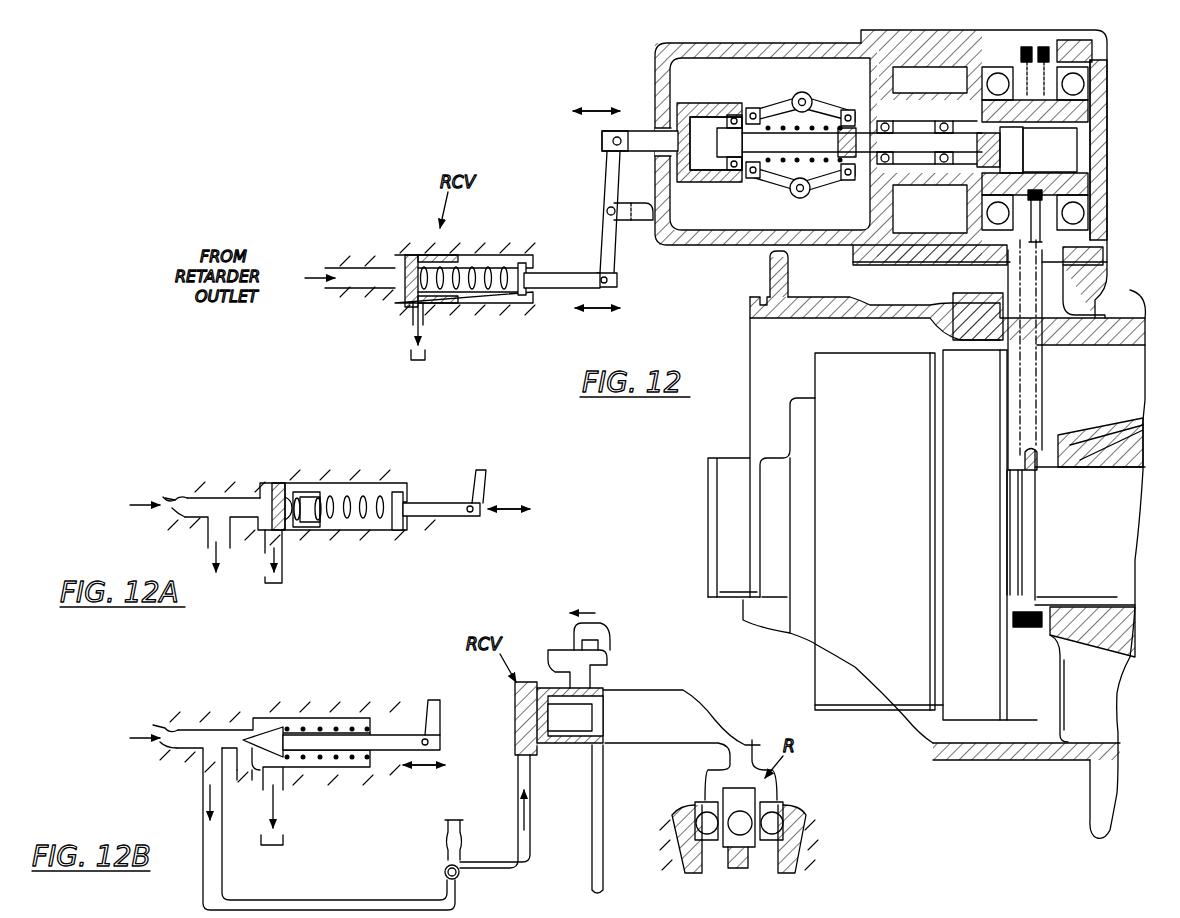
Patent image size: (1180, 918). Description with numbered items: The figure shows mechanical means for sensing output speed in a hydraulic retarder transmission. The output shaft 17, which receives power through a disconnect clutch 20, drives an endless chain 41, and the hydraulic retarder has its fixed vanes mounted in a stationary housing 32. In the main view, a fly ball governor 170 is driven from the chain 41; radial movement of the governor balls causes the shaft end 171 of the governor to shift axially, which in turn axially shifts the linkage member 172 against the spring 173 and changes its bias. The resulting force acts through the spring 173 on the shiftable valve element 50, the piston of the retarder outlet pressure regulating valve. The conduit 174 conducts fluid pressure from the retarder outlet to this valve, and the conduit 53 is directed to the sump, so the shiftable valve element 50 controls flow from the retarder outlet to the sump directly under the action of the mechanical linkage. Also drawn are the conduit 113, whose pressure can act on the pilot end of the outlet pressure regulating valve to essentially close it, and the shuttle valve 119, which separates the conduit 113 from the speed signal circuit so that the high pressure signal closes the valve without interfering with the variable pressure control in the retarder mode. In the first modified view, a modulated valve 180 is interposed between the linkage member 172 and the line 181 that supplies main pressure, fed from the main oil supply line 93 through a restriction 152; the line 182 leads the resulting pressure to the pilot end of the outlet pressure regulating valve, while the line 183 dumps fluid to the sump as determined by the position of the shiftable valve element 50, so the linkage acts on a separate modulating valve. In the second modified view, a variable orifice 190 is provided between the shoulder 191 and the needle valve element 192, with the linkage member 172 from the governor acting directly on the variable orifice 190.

In FIG. 12, the shaft 17 is at (1094, 539).
In FIG. 12, the disconnect clutch 20 is at (810, 355).
In FIG. 12, the stationary housing 32 is at (800, 808).
In FIG. 12, the endless chain 41 is at (1044, 412).
In FIG. 12, the shiftable valve element 50 is at (410, 256).
In FIG. 12A, the shiftable valve element 50 is at (288, 490).
In FIG. 12, the conduit 53 is at (408, 318).
In FIG. 12A, the main oil supply line 93 is at (150, 514).
In FIG. 12B, the main oil supply line 93 is at (150, 750).
In FIG. 12B, the conduit 113 is at (445, 832).
In FIG. 12B, the shuttle valve 119 is at (444, 877).
In FIG. 12A, the restriction 152 is at (168, 498).
In FIG. 12B, the restriction 152 is at (163, 728).
In FIG. 12, the fly ball governor 170 is at (760, 190).
In FIG. 12, the shaft end 171 is at (602, 141).
In FIG. 12, the linkage member 172 is at (565, 273).
In FIG. 12A, the linkage member 172 is at (458, 517).
In FIG. 12B, the linkage member 172 is at (398, 752).
In FIG. 12, the spring 173 is at (498, 268).
In FIG. 12A, the spring 173 is at (402, 490).
In FIG. 12B, the spring 173 is at (352, 728).
In FIG. 12, the conduit 174 is at (343, 268).
In FIG. 12A, the modulated valve 180 is at (364, 478).
In FIG. 12A, the line 181 is at (234, 497).
In FIG. 12A, the line 182 is at (210, 537).
In FIG. 12B, the line 182 is at (205, 782).
In FIG. 12A, the line 183 is at (283, 550).
In FIG. 12B, the line 183 is at (283, 795).
In FIG. 12B, the variable orifice 190 is at (250, 728).
In FIG. 12B, the shoulder 191 is at (252, 782).
In FIG. 12B, the needle valve element 192 is at (283, 733).